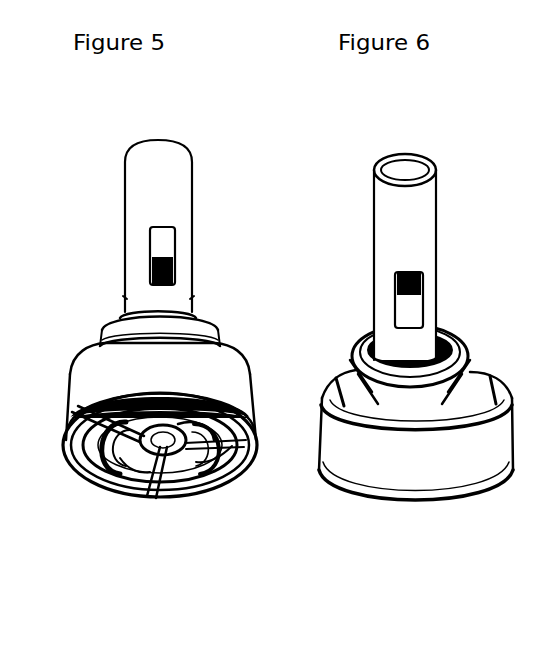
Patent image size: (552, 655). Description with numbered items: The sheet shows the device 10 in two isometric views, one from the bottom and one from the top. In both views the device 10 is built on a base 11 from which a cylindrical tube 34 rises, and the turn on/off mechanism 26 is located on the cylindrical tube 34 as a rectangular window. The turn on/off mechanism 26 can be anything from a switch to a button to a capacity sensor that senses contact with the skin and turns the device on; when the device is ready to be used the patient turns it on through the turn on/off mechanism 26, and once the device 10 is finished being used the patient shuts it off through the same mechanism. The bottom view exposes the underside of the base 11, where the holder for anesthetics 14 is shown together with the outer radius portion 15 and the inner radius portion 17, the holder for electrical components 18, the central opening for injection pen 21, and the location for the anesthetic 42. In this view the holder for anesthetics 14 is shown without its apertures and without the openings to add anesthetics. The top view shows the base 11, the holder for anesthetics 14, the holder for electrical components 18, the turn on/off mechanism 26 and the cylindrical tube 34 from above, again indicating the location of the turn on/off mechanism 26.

In FIG. 5, the device 10 is at (100, 131).
In FIG. 6, the device 10 is at (343, 141).
In FIG. 5, the base 11 is at (258, 455).
In FIG. 6, the base 11 is at (357, 493).
In FIG. 5, the holder for anesthetics 14 is at (70, 464).
In FIG. 6, the holder for anesthetics 14 is at (460, 466).
In FIG. 5, the outer radius portion 15 is at (72, 421).
In FIG. 5, the inner radius portion 17 is at (146, 493).
In FIG. 5, the holder for electrical components 18 is at (200, 486).
In FIG. 6, the holder for electrical components 18 is at (408, 400).
In FIG. 5, the opening for injection pen 21 is at (164, 448).
In FIG. 5, the turn on/off mechanism 26 is at (166, 247).
In FIG. 6, the turn on/off mechanism 26 is at (409, 308).
In FIG. 5, the cylindrical tube 34 is at (134, 191).
In FIG. 6, the cylindrical tube 34 is at (377, 224).
In FIG. 5, the location for the anesthetic 42 is at (112, 488).